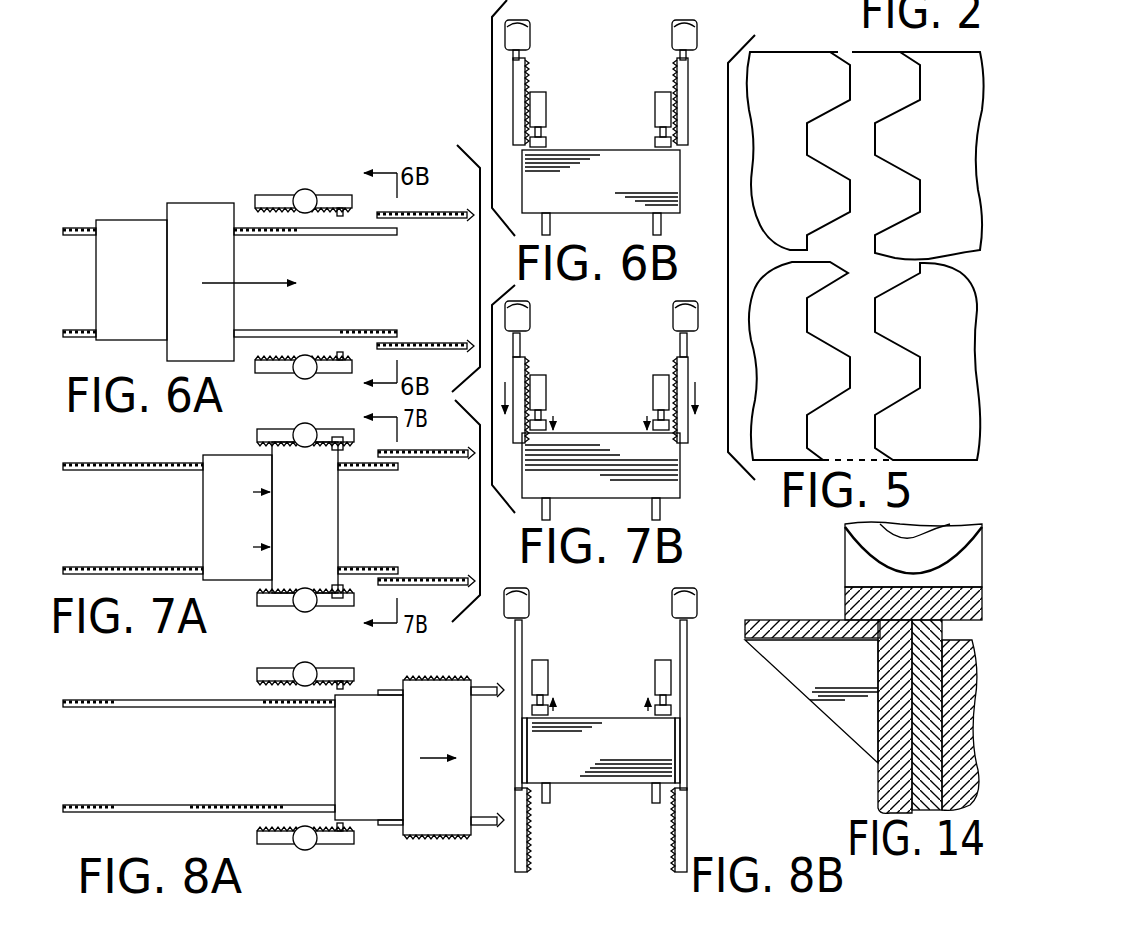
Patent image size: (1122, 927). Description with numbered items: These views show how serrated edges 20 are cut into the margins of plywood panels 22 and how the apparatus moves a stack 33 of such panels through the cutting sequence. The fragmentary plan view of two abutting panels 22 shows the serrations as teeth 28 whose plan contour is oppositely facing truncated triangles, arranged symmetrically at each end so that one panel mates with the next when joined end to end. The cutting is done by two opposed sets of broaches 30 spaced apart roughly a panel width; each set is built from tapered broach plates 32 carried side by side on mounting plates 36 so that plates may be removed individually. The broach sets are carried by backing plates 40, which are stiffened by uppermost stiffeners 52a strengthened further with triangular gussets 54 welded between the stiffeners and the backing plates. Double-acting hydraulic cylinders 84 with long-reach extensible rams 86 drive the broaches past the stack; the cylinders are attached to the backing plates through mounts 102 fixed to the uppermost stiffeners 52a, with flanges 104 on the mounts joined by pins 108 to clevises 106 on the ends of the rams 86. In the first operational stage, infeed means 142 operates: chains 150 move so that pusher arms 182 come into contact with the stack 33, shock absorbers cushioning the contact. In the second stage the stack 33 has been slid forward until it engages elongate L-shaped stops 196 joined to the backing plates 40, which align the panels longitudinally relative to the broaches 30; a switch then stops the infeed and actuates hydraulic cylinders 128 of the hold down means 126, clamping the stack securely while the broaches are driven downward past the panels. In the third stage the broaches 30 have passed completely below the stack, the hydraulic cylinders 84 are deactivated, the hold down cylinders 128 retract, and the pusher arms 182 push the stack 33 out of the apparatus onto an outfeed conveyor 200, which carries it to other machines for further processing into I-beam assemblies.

In FIG. 8A, the serrated edges 20 is at (448, 676).
In FIG. 8B, the serrated edges 20 is at (688, 755).
In FIG. 6A, the panels 22 is at (200, 214).
In FIG. 7A, the panels 22 is at (328, 515).
In FIG. 8A, the panels 22 is at (427, 697).
In FIG. 6B, the panels 22 is at (583, 163).
In FIG. 7B, the panels 22 is at (577, 443).
In FIG. 8B, the panels 22 is at (615, 730).
In FIG. 5, the panels 22 is at (897, 297).
In FIG. 5, the teeth 28 is at (825, 95).
In FIG. 6A, the broaches 30 is at (263, 199).
In FIG. 7A, the broaches 30 is at (262, 438).
In FIG. 8A, the broaches 30 is at (258, 673).
In FIG. 6B, the broaches 30 is at (676, 73).
In FIG. 7B, the broaches 30 is at (676, 360).
In FIG. 8B, the broaches 30 is at (674, 855).
In FIG. 14, the broach plates 32 is at (957, 748).
In FIG. 6A, the stack 33 is at (225, 199).
In FIG. 7A, the stack 33 is at (345, 492).
In FIG. 8A, the stack 33 is at (408, 841).
In FIG. 6B, the stack 33 is at (686, 218).
In FIG. 7B, the stack 33 is at (686, 491).
In FIG. 8B, the stack 33 is at (689, 779).
In FIG. 14, the mounting plates 36 is at (930, 790).
In FIG. 14, the backing plates 40 is at (890, 775).
In FIG. 14, the uppermost stiffeners 52a is at (788, 625).
In FIG. 14, the triangular gussets 54 is at (802, 682).
In FIG. 6A, the hydraulic cylinders 84 is at (307, 190).
In FIG. 7A, the hydraulic cylinders 84 is at (302, 424).
In FIG. 8A, the hydraulic cylinders 84 is at (309, 663).
In FIG. 6B, the hydraulic cylinders 84 is at (671, 33).
In FIG. 7B, the hydraulic cylinders 84 is at (672, 313).
In FIG. 8B, the hydraulic cylinders 84 is at (671, 598).
In FIG. 6B, the rams 86 is at (680, 56).
In FIG. 7B, the rams 86 is at (679, 341).
In FIG. 8B, the rams 86 is at (679, 633).
In FIG. 14, the mounts 102 is at (853, 598).
In FIG. 14, the flanges 104 is at (857, 570).
In FIG. 14, the clevises 106 is at (858, 530).
In FIG. 14, the pins 108 is at (917, 531).
In FIG. 6B, the hold down means 126 is at (650, 98).
In FIG. 7B, the hold down means 126 is at (648, 380).
In FIG. 8B, the hold down means 126 is at (652, 661).
In FIG. 6B, the hydraulic cylinders 128 is at (655, 113).
In FIG. 7B, the hydraulic cylinders 128 is at (653, 395).
In FIG. 8B, the hydraulic cylinders 128 is at (655, 678).
In FIG. 6A, the infeed means 142 is at (141, 200).
In FIG. 7A, the infeed means 142 is at (222, 452).
In FIG. 8A, the infeed means 142 is at (330, 743).
In FIG. 6A, the chains 150 is at (385, 237).
In FIG. 7A, the chains 150 is at (122, 471).
In FIG. 8A, the chains 150 is at (162, 709).
In FIG. 6B, the chains 150 is at (601, 229).
In FIG. 7B, the chains 150 is at (652, 516).
In FIG. 8B, the chains 150 is at (652, 798).
In FIG. 6A, the pusher arms 182 is at (125, 236).
In FIG. 7A, the pusher arms 182 is at (215, 525).
In FIG. 8A, the pusher arms 182 is at (350, 765).
In FIG. 6A, the stops 196 is at (340, 216).
In FIG. 7A, the stops 196 is at (344, 438).
In FIG. 8A, the stops 196 is at (343, 686).
In FIG. 6A, the outfeed conveyor 200 is at (443, 220).
In FIG. 7A, the outfeed conveyor 200 is at (450, 458).
In FIG. 8A, the outfeed conveyor 200 is at (483, 701).